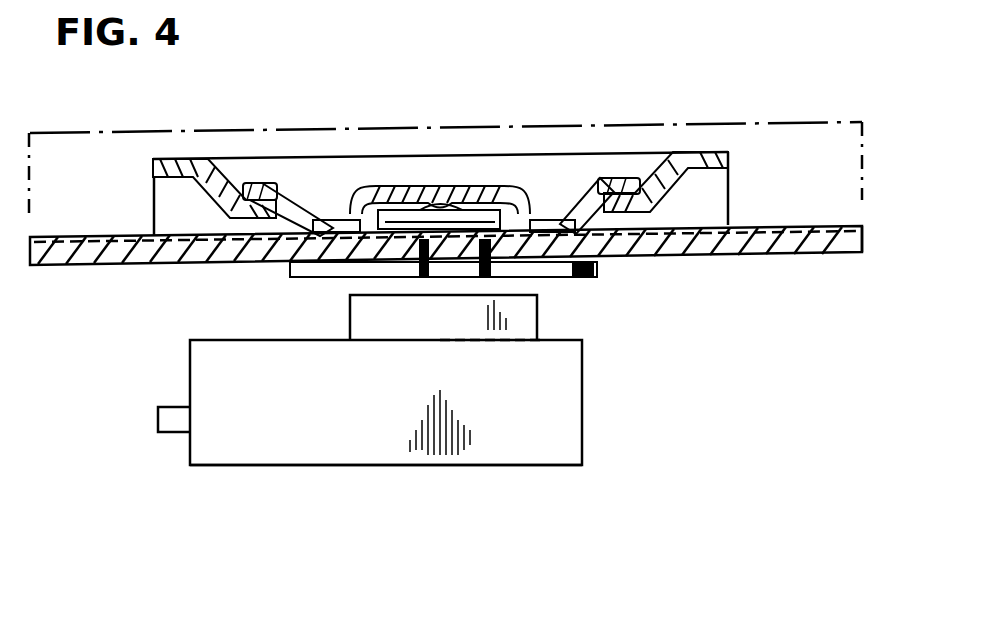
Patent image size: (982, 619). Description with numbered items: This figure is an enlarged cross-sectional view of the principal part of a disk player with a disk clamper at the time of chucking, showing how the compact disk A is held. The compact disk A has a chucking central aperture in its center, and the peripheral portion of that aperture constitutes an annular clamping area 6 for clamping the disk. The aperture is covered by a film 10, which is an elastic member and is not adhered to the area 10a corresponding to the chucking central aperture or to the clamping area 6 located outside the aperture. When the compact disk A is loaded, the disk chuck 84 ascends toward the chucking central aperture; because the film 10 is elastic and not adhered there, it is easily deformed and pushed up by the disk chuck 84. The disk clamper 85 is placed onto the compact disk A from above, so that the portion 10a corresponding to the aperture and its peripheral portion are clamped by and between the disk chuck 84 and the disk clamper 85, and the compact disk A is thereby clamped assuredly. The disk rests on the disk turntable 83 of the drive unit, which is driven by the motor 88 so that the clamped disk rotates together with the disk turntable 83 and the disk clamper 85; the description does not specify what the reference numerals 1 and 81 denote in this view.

The circuit board 1 is at (717, 260).
The film 10 is at (80, 267).
The area corresponding to the chucking central aperture 10a is at (495, 212).
The clamping area 6 is at (287, 273).
The switch unit 81 is at (583, 366).
The disk turntable 83 is at (527, 267).
The disk chuck 84 is at (415, 237).
The disk clamper 85 is at (400, 190).
The motor 88 is at (362, 432).
The compact disk A is at (786, 258).